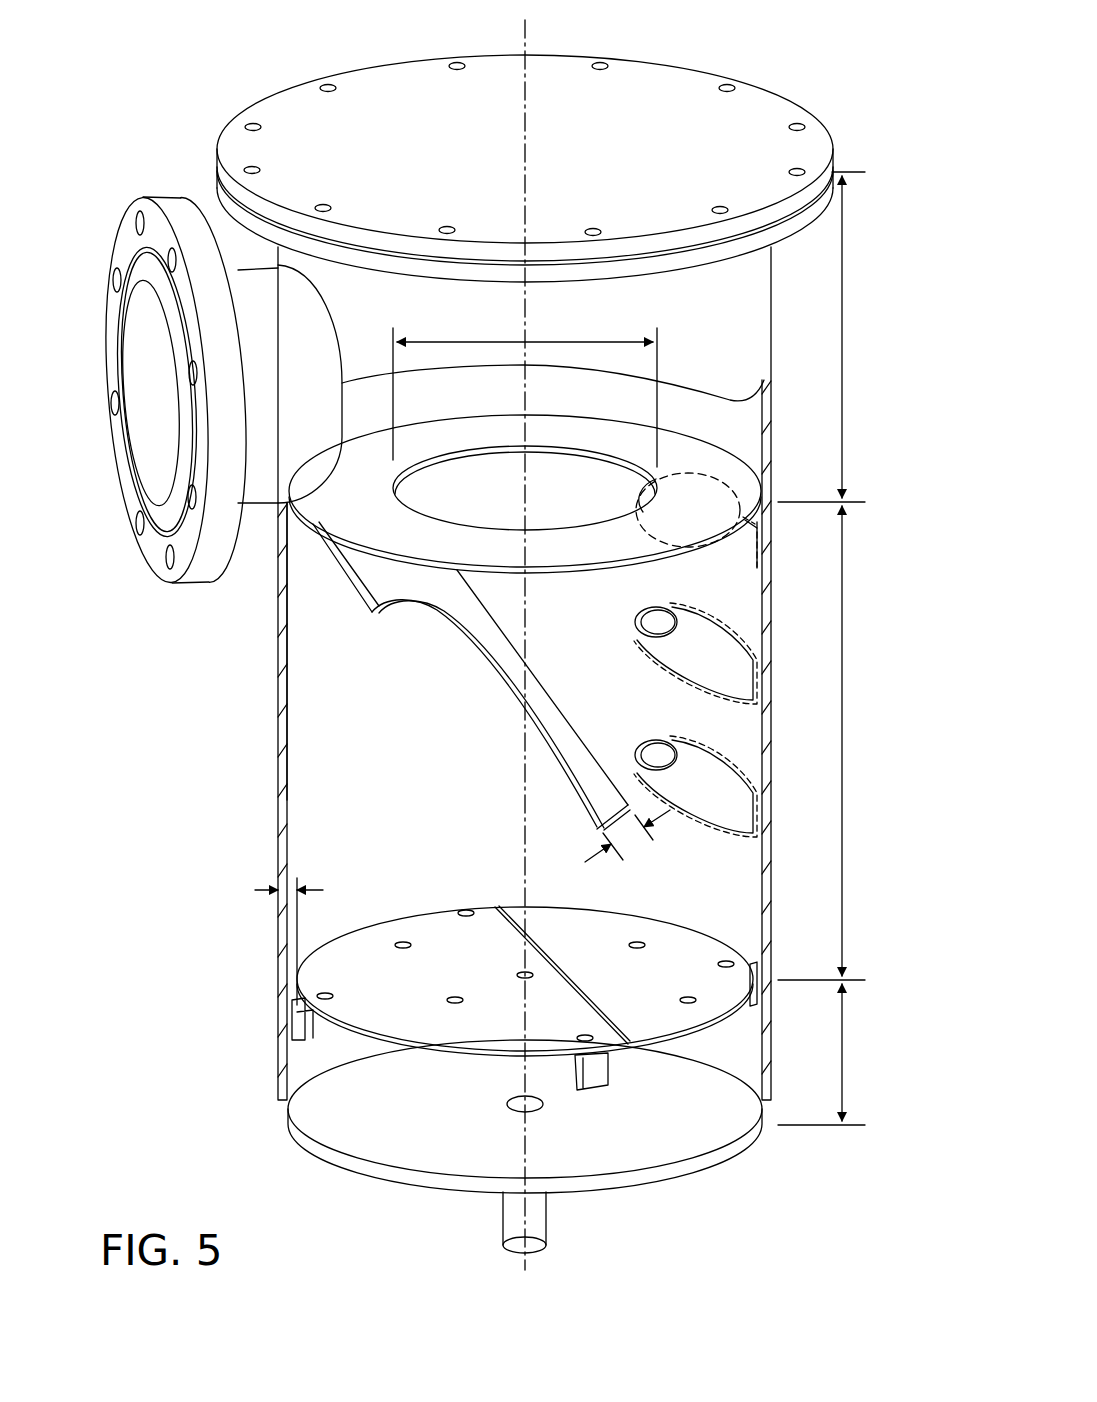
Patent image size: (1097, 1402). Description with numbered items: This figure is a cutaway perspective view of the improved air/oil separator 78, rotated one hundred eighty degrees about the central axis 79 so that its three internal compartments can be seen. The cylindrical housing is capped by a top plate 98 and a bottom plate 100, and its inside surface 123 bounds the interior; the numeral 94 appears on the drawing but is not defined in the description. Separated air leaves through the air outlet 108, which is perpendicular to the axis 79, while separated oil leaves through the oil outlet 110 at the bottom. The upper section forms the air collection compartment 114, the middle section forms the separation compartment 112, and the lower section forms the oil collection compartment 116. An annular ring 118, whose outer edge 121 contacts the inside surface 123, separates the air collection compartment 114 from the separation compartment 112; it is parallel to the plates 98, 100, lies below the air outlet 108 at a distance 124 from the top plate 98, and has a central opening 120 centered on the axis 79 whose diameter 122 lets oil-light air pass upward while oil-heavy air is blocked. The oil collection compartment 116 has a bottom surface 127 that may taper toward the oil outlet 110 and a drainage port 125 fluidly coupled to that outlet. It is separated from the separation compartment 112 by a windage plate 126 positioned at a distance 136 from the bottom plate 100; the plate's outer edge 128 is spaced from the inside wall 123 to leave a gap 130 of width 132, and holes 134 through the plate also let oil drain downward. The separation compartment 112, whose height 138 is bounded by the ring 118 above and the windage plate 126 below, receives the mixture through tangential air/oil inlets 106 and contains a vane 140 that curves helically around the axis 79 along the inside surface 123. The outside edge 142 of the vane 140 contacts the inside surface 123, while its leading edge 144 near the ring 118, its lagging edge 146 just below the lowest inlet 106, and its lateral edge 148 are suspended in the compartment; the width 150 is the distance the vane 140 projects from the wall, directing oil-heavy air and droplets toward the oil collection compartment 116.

The air/oil separator 78 is at (784, 66).
The central axis 79 is at (527, 38).
The cylindrical housing 94 is at (772, 728).
The top plate 98 is at (390, 80).
The bottom plate 100 is at (530, 1120).
The air/oil inlets 106 is at (750, 542).
The air outlet 108 is at (288, 313).
The oil outlet 110 is at (537, 1211).
The separation compartment 112 is at (745, 900).
The air collection compartment 114 is at (556, 472).
The oil collection compartment 116 is at (740, 1042).
The annular ring 118 is at (747, 487).
The central opening 120 is at (552, 447).
The outer edge 121 is at (317, 527).
The diameter of the opening 122 is at (542, 340).
The inside surface 123 is at (290, 770).
The distance 124 is at (842, 348).
The drainage port 125 is at (539, 1105).
The windage plate 126 is at (556, 988).
The bottom surface 127 is at (341, 1131).
The outer edge 128 is at (457, 1050).
The gap 130 is at (292, 840).
The width of the gap 132 is at (275, 890).
The holes 134 is at (521, 971).
The distance 136 is at (842, 1055).
The height of the separation compartment 138 is at (842, 650).
The vane 140 is at (508, 709).
The outside edge 142 is at (577, 713).
The leading edge 144 is at (352, 583).
The lagging edge 146 is at (610, 818).
The lateral edge 148 is at (503, 690).
The width of the vane 150 is at (593, 865).